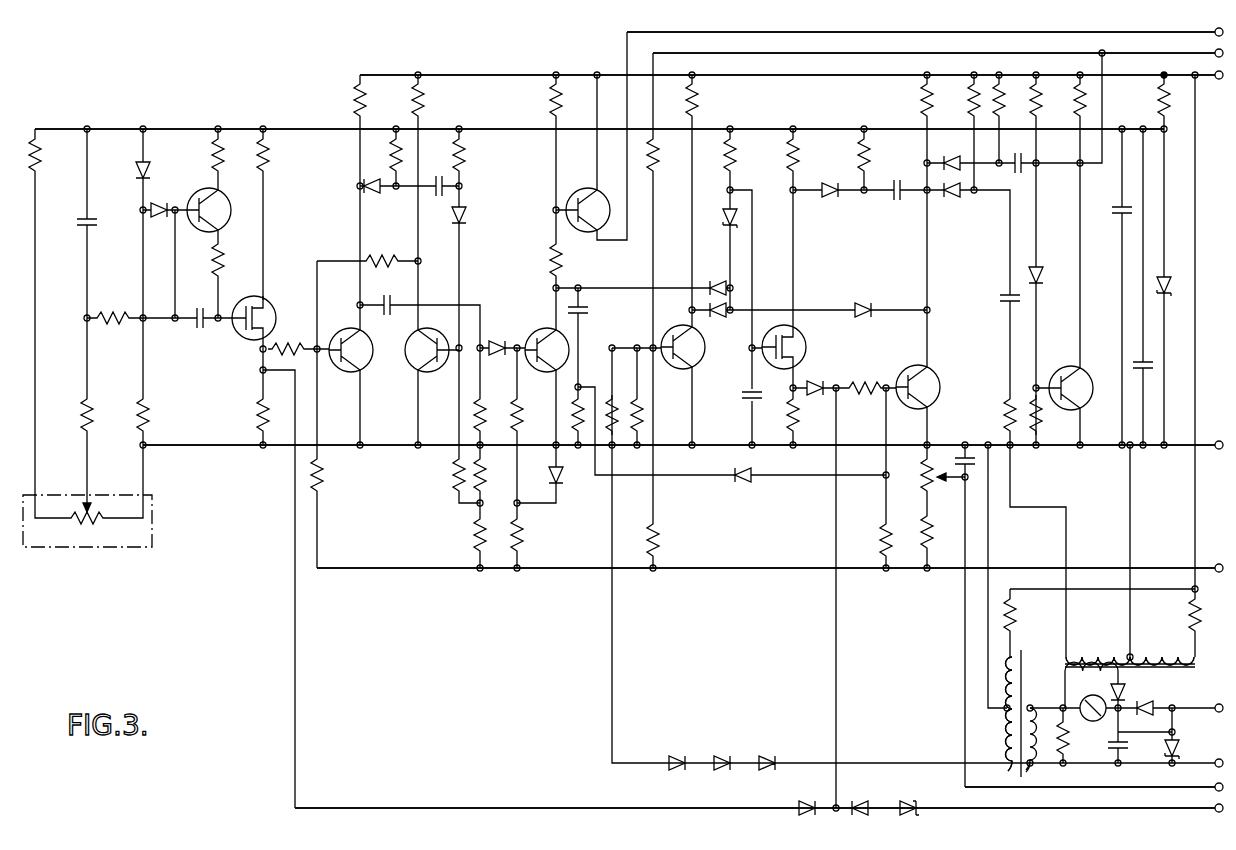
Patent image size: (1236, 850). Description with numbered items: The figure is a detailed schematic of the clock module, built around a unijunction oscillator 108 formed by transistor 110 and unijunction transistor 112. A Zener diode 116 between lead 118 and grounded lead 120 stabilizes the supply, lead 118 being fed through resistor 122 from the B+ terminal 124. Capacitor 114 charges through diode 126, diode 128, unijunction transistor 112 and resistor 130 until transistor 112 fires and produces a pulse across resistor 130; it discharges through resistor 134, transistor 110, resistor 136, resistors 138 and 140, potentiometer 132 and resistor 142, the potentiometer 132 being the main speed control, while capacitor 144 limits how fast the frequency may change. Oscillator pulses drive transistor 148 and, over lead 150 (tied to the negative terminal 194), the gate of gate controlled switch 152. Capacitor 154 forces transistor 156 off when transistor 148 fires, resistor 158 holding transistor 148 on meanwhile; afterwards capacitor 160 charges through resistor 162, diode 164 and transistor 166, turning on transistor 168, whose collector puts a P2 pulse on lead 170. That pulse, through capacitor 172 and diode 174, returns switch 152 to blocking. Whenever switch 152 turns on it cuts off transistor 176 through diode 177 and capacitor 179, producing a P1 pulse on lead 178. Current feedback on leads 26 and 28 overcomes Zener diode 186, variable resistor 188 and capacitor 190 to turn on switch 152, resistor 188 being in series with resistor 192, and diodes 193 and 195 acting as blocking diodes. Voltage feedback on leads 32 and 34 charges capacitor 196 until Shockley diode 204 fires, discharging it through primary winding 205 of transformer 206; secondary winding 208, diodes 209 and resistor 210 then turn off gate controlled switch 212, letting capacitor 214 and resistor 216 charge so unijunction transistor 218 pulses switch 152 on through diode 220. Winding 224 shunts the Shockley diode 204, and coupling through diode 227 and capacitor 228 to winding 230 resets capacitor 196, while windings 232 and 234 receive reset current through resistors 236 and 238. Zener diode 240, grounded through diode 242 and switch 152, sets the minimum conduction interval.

The lead 170 is at (1205, 32).
The lead 178 is at (1192, 55).
The terminal 124 is at (1175, 75).
The resistor 122 is at (1158, 103).
The resistor 162 is at (356, 100).
The lead 118 is at (845, 128).
The resistor 216 is at (736, 170).
The diode 177 is at (960, 158).
The capacitor 179 is at (1026, 163).
The diode 227 is at (952, 195).
The Zener diode 240 is at (730, 222).
The transistor 168 is at (598, 236).
The diode 242 is at (862, 304).
The capacitor 228 is at (1002, 298).
The Zener diode 116 is at (1164, 292).
The resistor 158 is at (402, 258).
The capacitor 160 is at (392, 304).
The transistor 156 is at (410, 336).
The diode 164 is at (497, 342).
The capacitor 172 is at (585, 310).
The unijunction transistor 218 is at (803, 340).
The gate controlled switch 212 is at (700, 362).
The diode 220 is at (814, 380).
The gate controlled switch 152 is at (908, 366).
The transistor 176 is at (1090, 372).
The unijunction oscillator 108 is at (322, 214).
The transistor 110 is at (194, 194).
The unijunction transistor 112 is at (270, 308).
The resistor 134 is at (212, 158).
The diode 126 is at (136, 162).
The diode 128 is at (138, 206).
The resistor 142 is at (40, 160).
The capacitor 144 is at (80, 218).
The resistor 138 is at (120, 310).
The capacitor 114 is at (196, 336).
The resistor 136 is at (222, 272).
The resistor 140 is at (82, 402).
The resistor 130 is at (256, 398).
The potentiometer 132 is at (92, 532).
The transistor 148 is at (370, 362).
The transistor 166 is at (546, 364).
The resistor 210 is at (616, 445).
The capacitor 214 is at (746, 404).
The diode 174 is at (744, 482).
The capacitor 190 is at (972, 450).
The variable resistor 188 is at (920, 480).
The resistor 192 is at (946, 512).
The lead 120 is at (1100, 448).
The terminal 194 is at (1215, 443).
The lead 150 is at (582, 566).
The resistor 236 is at (1016, 610).
The resistor 238 is at (1190, 612).
The winding 234 is at (1018, 657).
The winding 230 is at (1080, 650).
The winding 232 is at (1152, 656).
The Shockley diode 204 is at (1080, 700).
The winding 224 is at (1124, 688).
The lead 32 is at (1205, 708).
The secondary winding 208 is at (1005, 735).
The capacitor 196 is at (1114, 741).
The lead 34 is at (1212, 764).
The transformer 206 is at (1012, 766).
The primary winding 205 is at (1030, 766).
The lead 26 is at (1212, 787).
The lead 28 is at (1178, 810).
The diodes 209 is at (762, 760).
The diode 193 is at (805, 804).
The diode 195 is at (862, 804).
The Zener diode 186 is at (912, 804).
The capacitor 154 is at (466, 187).